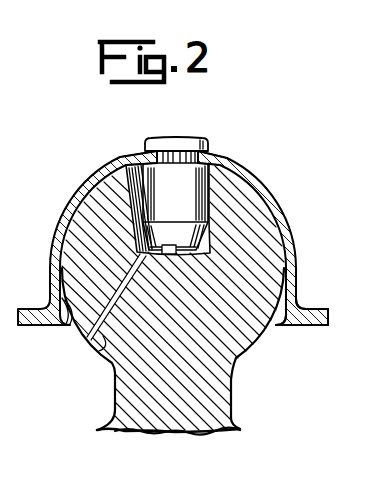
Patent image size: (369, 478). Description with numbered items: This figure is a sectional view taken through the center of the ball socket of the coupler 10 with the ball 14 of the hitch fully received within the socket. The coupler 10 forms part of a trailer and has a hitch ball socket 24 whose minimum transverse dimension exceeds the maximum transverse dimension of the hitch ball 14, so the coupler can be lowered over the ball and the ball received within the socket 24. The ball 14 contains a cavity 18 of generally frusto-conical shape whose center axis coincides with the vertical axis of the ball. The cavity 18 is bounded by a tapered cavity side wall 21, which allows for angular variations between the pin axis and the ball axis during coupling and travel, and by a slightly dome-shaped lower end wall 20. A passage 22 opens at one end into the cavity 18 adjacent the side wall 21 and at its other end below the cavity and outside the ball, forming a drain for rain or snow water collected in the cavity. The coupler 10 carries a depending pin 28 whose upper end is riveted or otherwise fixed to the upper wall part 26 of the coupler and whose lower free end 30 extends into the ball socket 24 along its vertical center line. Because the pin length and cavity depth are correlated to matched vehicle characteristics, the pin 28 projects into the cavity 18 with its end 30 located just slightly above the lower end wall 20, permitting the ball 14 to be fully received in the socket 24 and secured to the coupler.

The coupler 10 is at (76, 190).
The ball 14 is at (242, 376).
The cavity 18 is at (217, 191).
The lower end wall 20 is at (200, 266).
The cavity side wall 21 is at (216, 209).
The passage 22 is at (107, 339).
The hitch ball socket 24 is at (283, 321).
The upper wall part 26 is at (213, 158).
The pin 28 is at (158, 182).
The free end 30 is at (177, 250).